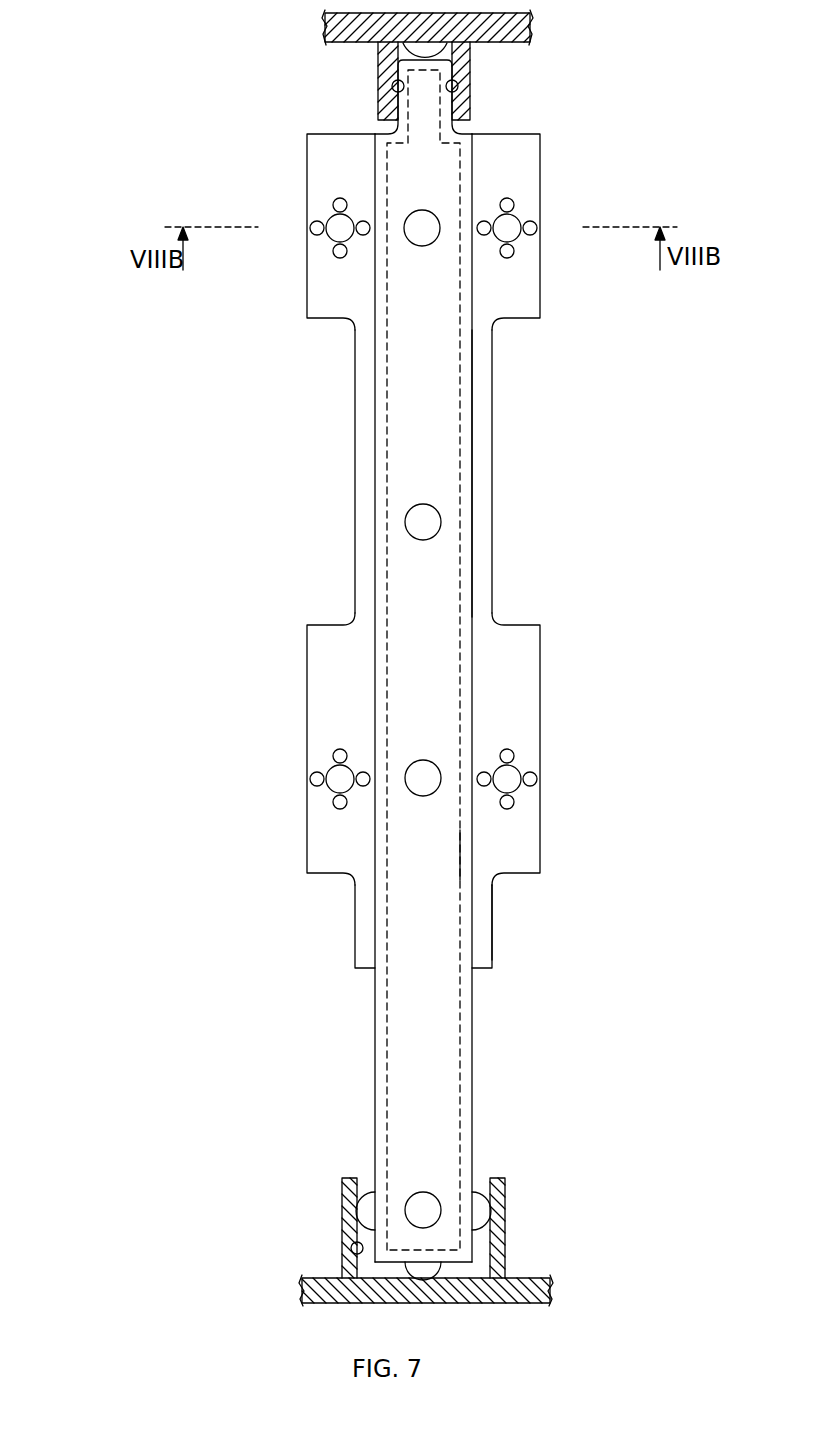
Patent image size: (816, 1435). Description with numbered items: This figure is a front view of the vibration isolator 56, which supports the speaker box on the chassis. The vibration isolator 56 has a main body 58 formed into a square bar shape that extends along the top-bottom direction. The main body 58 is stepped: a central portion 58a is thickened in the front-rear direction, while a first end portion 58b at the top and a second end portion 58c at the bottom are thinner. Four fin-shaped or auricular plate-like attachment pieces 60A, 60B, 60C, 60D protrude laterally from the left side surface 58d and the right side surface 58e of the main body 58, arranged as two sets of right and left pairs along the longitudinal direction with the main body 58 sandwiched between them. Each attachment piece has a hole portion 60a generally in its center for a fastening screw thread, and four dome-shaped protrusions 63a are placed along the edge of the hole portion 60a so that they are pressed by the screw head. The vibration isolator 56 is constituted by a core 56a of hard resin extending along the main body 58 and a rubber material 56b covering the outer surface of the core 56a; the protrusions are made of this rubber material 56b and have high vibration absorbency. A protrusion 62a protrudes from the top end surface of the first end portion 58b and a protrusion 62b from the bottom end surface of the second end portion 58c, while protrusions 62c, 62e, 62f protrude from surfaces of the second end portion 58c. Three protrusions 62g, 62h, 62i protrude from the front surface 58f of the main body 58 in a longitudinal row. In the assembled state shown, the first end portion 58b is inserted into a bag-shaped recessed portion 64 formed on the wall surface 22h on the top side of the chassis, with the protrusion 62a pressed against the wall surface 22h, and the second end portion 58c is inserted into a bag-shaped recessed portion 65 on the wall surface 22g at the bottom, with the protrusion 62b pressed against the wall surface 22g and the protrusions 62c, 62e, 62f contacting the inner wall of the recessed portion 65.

The vibration isolator 56 is at (89, 36).
The wall surface 22h is at (458, 55).
The wall surface 22g is at (490, 1304).
The main body 58 is at (508, 437).
The central portion 58a is at (472, 552).
The first end portion 58b is at (458, 87).
The second end portion 58c is at (475, 1250).
The left side surface 58d is at (375, 1046).
The right side surface 58e is at (472, 1053).
The front surface 58f is at (445, 1005).
The attachment piece 60A is at (307, 158).
The attachment piece 60B is at (540, 148).
The attachment piece 60C is at (307, 660).
The attachment piece 60D is at (540, 632).
The hole portion 60a is at (333, 217).
The protrusion 63a is at (342, 256).
The protrusion 62a is at (412, 50).
The protrusion 62b is at (396, 1301).
The protrusion 62c is at (425, 1205).
The protrusion 62e is at (366, 1210).
The protrusion 62f is at (482, 1210).
The protrusion 62g is at (418, 235).
The protrusion 62h is at (415, 522).
The protrusion 62i is at (425, 770).
The recessed portion 64 is at (380, 92).
The recessed portion 65 is at (352, 1248).
The core 56a is at (462, 855).
The rubber material 56b is at (492, 917).